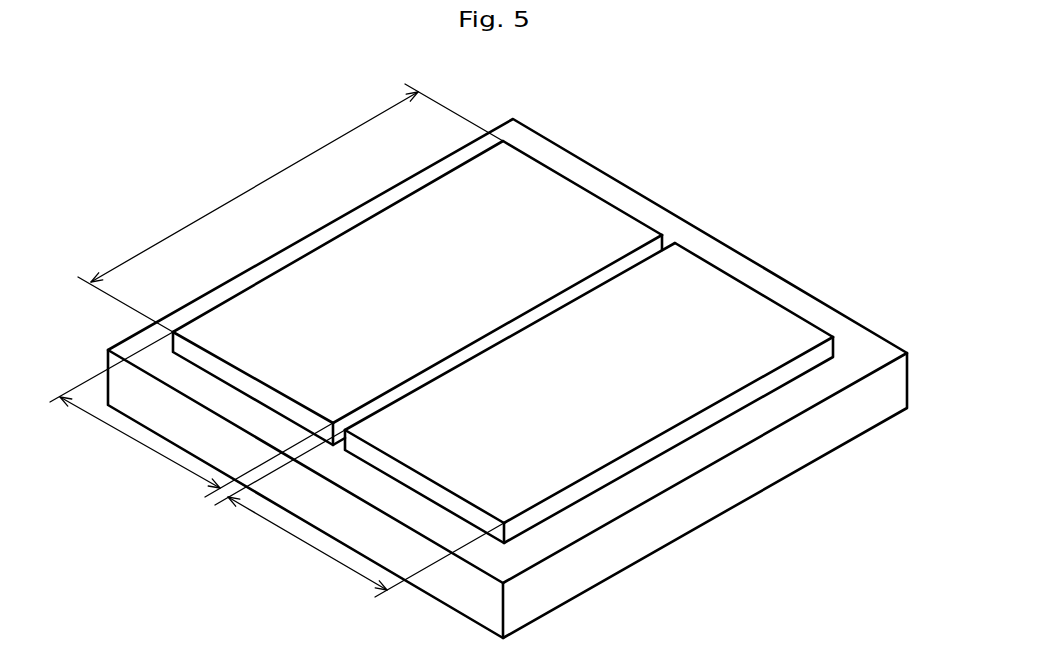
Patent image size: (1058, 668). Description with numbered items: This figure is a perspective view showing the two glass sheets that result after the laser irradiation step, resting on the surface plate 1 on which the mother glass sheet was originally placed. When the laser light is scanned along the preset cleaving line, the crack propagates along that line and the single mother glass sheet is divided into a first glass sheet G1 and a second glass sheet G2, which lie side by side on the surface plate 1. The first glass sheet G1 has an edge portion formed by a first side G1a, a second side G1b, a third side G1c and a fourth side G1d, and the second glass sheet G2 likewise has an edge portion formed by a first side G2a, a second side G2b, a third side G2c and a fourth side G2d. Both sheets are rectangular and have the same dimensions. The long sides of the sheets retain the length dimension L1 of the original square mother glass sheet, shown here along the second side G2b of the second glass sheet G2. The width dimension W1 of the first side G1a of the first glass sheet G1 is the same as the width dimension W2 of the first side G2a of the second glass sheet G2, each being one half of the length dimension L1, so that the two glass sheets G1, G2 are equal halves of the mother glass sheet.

The surface plate 1 is at (757, 465).
The first glass sheet G1 is at (606, 383).
The first side G1a is at (412, 471).
The second side G1b is at (635, 452).
The third side G1c is at (772, 293).
The fourth side G1d is at (559, 309).
The second glass sheet G2 is at (435, 284).
The first side G2a is at (242, 373).
The second side G2b is at (303, 255).
The third side G2c is at (601, 193).
The fourth side G2d is at (466, 347).
The length dimension L1 is at (290, 208).
The width dimension W1 is at (359, 513).
The width dimension W2 is at (191, 414).